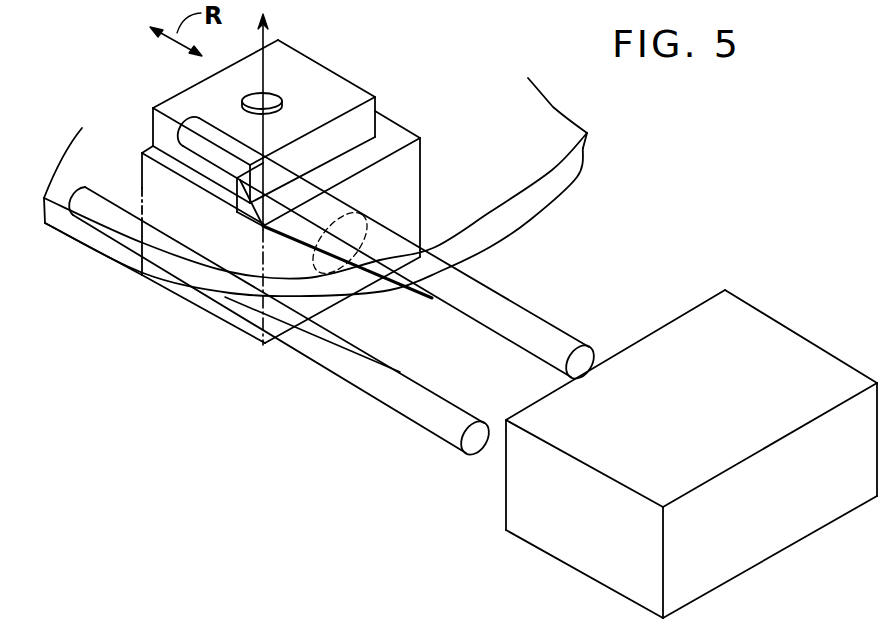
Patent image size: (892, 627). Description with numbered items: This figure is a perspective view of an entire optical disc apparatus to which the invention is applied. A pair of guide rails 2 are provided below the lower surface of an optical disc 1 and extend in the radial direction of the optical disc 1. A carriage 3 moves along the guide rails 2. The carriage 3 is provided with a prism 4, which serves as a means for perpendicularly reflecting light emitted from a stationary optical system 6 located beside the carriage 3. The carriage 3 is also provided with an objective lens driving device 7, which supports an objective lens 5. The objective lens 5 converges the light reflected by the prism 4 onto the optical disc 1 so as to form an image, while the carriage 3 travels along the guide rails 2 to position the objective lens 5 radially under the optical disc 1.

The optical disc 1 is at (550, 163).
The guide rails 2 is at (373, 382).
The carriage 3 is at (187, 222).
The prism 4 is at (266, 222).
The objective lens 5 is at (277, 100).
The stationary optical system 6 is at (688, 323).
The objective lens driving device 7 is at (365, 116).